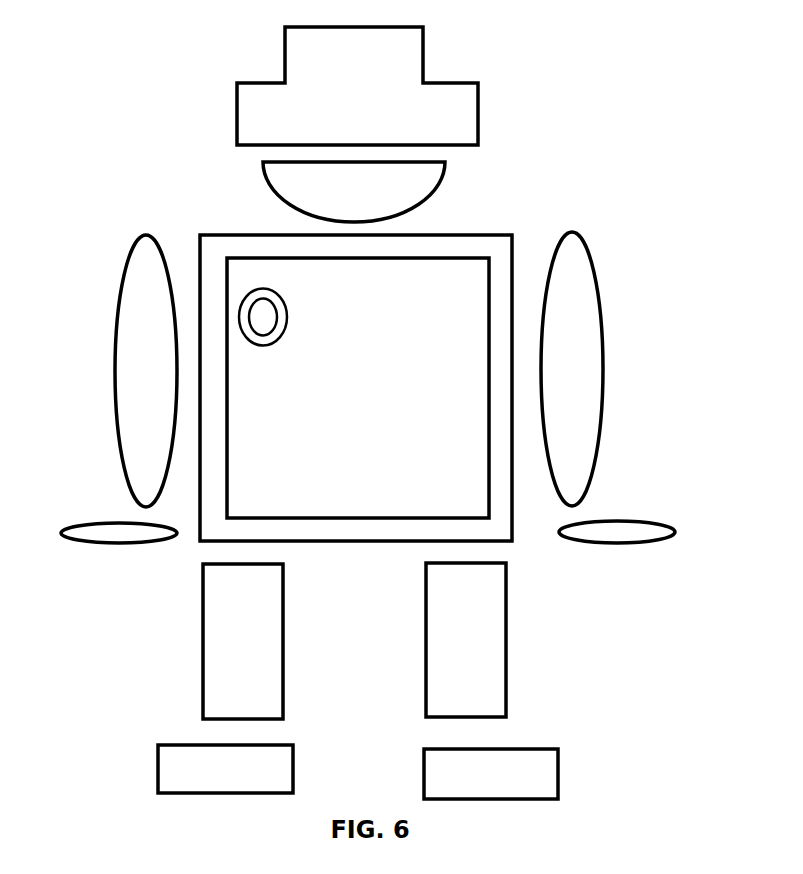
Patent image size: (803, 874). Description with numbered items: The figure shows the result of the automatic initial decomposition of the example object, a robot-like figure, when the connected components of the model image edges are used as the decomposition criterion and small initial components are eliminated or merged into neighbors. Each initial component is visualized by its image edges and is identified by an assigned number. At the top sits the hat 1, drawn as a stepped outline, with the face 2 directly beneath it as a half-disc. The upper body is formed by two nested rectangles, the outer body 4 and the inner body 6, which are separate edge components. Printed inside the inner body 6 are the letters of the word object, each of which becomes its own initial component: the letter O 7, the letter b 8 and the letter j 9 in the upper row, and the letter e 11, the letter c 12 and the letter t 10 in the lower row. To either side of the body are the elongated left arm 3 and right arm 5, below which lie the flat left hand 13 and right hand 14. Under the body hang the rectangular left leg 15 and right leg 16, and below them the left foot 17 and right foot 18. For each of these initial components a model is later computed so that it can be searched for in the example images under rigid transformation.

The hat 1 is at (423, 47).
The face 2 is at (445, 180).
The left arm 3 is at (128, 252).
The outer body 4 is at (223, 235).
The right arm 5 is at (588, 250).
The inner body 6 is at (280, 260).
The letter O 7 is at (262, 350).
The letter b 8 is at (363, 350).
The letter j 9 is at (463, 362).
The letter t 10 is at (463, 483).
The letter e 11 is at (265, 483).
The letter c 12 is at (367, 484).
The left hand 13 is at (61, 533).
The right hand 14 is at (675, 532).
The left leg 15 is at (203, 637).
The right leg 16 is at (506, 636).
The left foot 17 is at (158, 768).
The right foot 18 is at (558, 770).